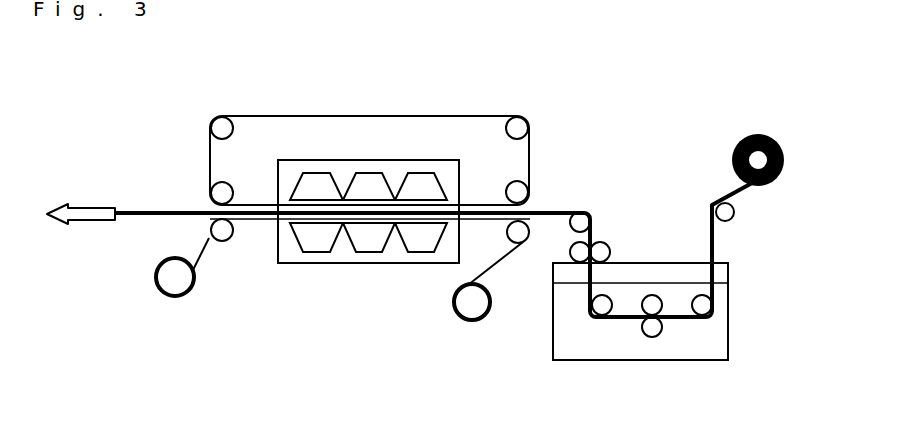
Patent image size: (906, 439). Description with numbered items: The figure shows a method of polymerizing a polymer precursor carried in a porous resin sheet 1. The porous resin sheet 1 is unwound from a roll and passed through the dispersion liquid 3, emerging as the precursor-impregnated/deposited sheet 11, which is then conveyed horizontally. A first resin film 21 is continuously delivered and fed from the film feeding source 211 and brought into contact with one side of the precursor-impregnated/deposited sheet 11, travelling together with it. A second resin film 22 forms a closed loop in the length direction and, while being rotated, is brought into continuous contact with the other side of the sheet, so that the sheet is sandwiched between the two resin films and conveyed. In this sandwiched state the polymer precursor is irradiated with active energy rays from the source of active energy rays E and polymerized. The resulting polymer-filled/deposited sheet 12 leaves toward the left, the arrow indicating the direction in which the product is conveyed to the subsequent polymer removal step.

The porous resin sheet 1 is at (745, 195).
The dispersion liquid 3 is at (682, 352).
The precursor-impregnated/deposited sheet 11 is at (560, 208).
The polymer-filled/deposited sheet 12 is at (137, 218).
The first resin film 21 is at (208, 257).
The film feeding source 211 is at (480, 322).
The second resin film 22 is at (465, 115).
The source of active energy rays E is at (373, 175).